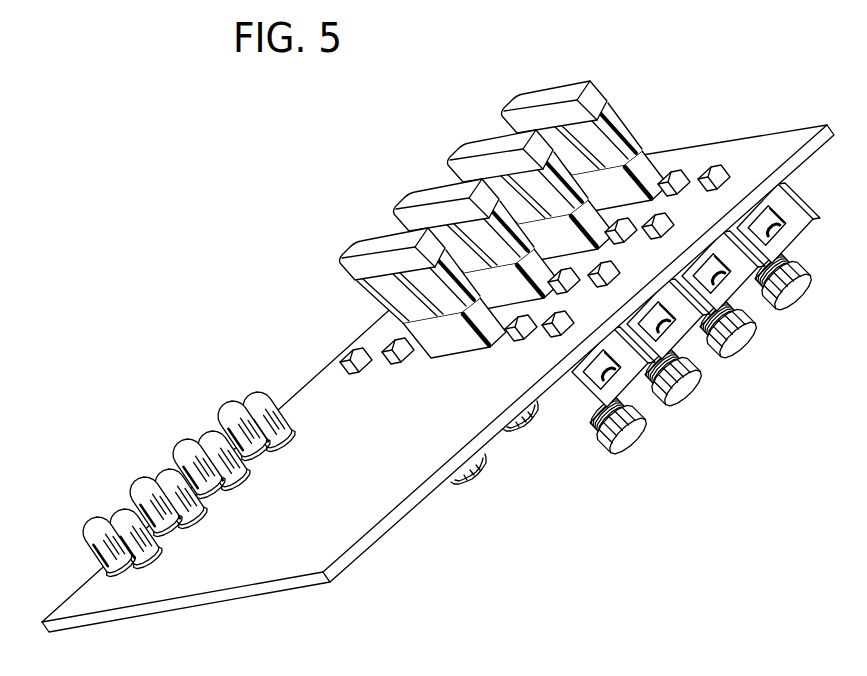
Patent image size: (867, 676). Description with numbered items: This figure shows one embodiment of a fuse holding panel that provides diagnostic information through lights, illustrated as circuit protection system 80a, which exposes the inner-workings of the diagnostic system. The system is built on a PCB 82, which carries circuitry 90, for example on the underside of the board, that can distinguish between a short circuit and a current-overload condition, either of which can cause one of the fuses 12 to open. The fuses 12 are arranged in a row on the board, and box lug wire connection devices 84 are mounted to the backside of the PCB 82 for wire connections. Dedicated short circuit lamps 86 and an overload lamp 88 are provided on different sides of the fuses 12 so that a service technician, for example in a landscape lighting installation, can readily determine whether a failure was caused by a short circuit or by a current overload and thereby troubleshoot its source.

The circuit protection system 80a is at (659, 90).
The fuse 12 is at (352, 248).
The PCB 82 is at (350, 492).
The box lug wire connection device 84 is at (648, 438).
The short circuit lamp 86 is at (123, 508).
The overload lamp 88 is at (88, 522).
The circuitry 90 is at (328, 382).